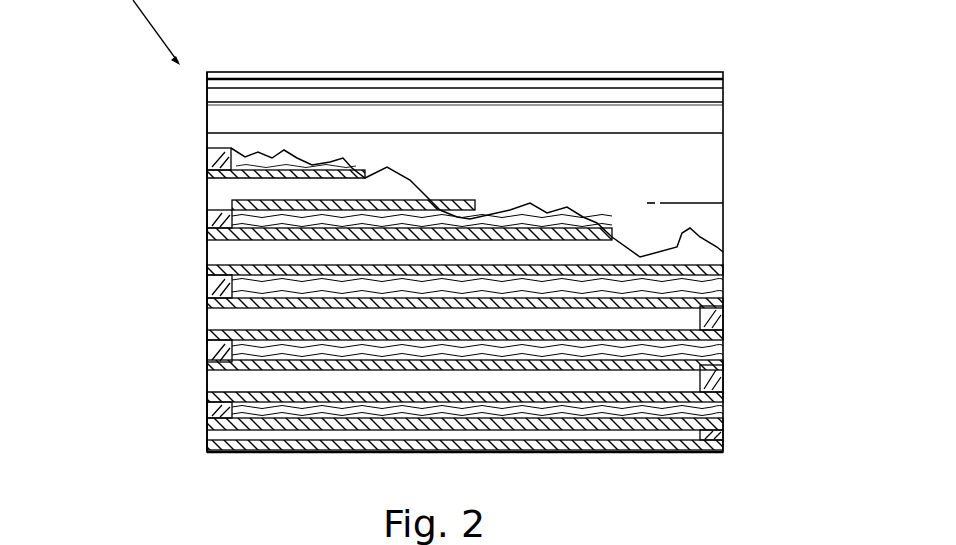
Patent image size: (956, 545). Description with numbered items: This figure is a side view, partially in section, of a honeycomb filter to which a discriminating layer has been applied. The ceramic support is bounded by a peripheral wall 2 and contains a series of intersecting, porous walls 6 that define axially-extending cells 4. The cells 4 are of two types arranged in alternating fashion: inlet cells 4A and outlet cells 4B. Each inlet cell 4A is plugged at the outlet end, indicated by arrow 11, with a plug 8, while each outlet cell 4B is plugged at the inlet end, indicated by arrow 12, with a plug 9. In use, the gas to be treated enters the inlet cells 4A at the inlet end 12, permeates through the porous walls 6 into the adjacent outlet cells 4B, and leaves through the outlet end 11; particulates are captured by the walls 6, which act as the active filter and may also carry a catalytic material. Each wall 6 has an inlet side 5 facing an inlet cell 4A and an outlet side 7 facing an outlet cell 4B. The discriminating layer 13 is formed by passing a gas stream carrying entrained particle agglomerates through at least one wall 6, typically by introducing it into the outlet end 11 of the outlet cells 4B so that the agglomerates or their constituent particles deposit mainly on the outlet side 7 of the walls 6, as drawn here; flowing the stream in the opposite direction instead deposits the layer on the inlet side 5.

The peripheral wall 2 is at (601, 195).
The axially-extending cells 4 is at (330, 255).
The inlet cells 4A is at (222, 190).
The outlet cells 4B is at (233, 157).
The inlet side 5 is at (667, 424).
The walls 6 is at (255, 266).
The outlet side 7 is at (583, 233).
The plugs 8 is at (723, 333).
The plugs 9 is at (215, 285).
The outlet end 11 is at (760, 167).
The inlet end 12 is at (126, 284).
The discriminating layer 13 is at (407, 210).